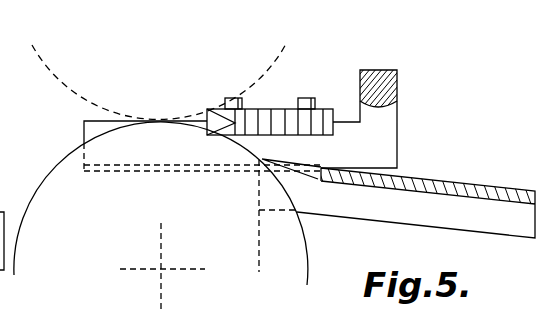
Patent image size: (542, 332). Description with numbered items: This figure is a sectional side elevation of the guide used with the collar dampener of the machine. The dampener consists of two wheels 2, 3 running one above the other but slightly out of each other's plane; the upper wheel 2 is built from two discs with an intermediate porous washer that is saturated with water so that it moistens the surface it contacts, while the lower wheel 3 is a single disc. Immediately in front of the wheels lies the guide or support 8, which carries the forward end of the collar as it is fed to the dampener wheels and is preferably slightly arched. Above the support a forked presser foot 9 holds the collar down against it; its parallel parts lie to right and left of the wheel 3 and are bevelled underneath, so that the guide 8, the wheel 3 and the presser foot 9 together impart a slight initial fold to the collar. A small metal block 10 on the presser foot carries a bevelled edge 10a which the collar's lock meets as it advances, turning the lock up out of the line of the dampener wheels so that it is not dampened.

The wheel 2 is at (81, 96).
The wheel 3 is at (34, 201).
The guide or support 8 is at (481, 185).
The presser foot 9 is at (399, 118).
The metal block 10 is at (277, 107).
The bevelled edge 10a is at (312, 129).